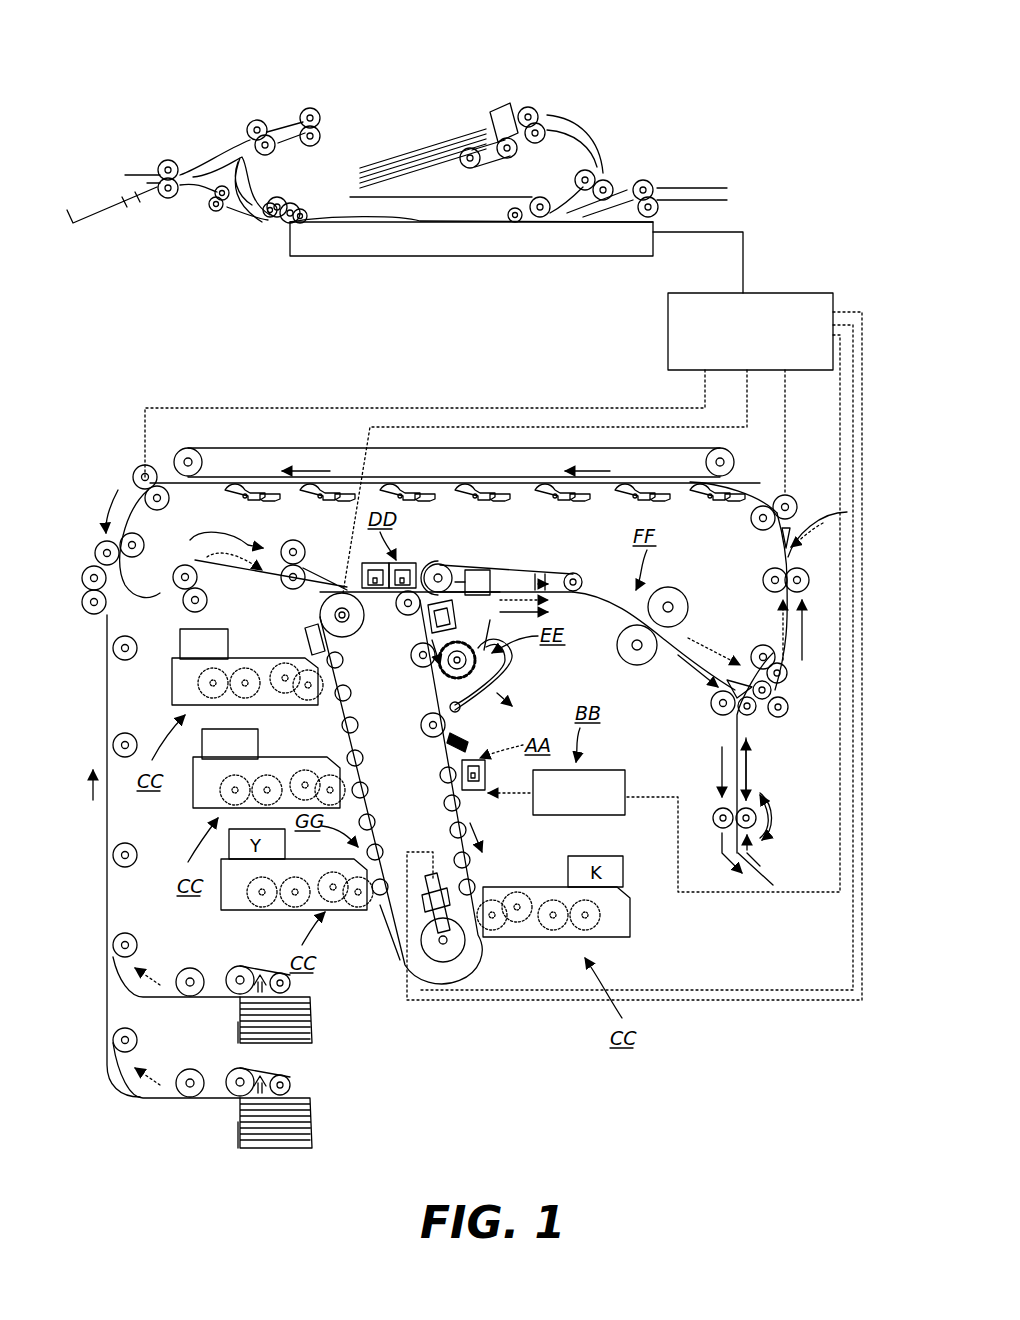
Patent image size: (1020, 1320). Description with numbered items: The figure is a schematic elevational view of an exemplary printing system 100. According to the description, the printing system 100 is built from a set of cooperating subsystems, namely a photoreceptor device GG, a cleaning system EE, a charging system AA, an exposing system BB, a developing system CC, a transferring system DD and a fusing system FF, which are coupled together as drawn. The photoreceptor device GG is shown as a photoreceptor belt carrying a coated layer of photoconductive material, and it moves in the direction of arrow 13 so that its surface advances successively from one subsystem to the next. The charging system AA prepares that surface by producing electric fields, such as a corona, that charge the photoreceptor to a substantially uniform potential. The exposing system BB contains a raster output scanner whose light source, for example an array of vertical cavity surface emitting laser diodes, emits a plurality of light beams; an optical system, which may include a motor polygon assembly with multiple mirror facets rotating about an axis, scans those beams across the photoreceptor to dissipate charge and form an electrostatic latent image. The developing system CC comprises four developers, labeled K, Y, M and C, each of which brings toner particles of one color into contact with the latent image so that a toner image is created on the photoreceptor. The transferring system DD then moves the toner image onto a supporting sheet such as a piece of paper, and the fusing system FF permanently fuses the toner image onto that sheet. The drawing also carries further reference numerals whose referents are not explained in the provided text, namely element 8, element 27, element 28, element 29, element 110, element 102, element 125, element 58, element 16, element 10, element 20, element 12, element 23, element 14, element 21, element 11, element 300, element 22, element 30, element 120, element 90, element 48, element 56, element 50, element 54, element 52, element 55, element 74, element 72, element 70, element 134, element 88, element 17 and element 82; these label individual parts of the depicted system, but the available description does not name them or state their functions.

The printing system 100 is at (717, 58).
The document handler input 8 is at (192, 143).
The document handler 27 is at (640, 136).
The raster input scanner 28 is at (413, 249).
The controller 29 is at (765, 341).
The inverter transport belt 110 is at (262, 443).
The inverter roller 102 is at (138, 474).
The feed roller pair 125 is at (355, 529).
The cleaning station 58 is at (405, 563).
The belt roller 16 is at (318, 625).
The photoreceptor belt 10 is at (465, 803).
The drive roller 20 is at (466, 940).
The belt support 12 is at (385, 928).
The backup rollers 23 is at (360, 755).
The roller 14 is at (408, 618).
The rollers 21 is at (436, 750).
The arrow 13 is at (480, 845).
The idler rollers 11 is at (376, 800).
The transfer assembly 300 is at (493, 693).
The charging station 22 is at (486, 768).
The raster output scanner 30 is at (620, 815).
The cyan developer unit 120 is at (172, 632).
The magenta developer unit 90 is at (330, 712).
The paper path 48 is at (112, 808).
The paper path guide 56 is at (115, 905).
The sheet feeder 50 is at (213, 960).
The paper tray 54 is at (305, 993).
The feed rollers 52 is at (235, 1092).
The second paper tray 55 is at (300, 1093).
The fuser roller 74 is at (672, 598).
The pressure roller 72 is at (634, 667).
The fuser 70 is at (614, 648).
The exit rollers 134 is at (720, 697).
The output rollers 88 is at (777, 537).
The output path 17 is at (813, 515).
The duplex path 82 is at (715, 730).